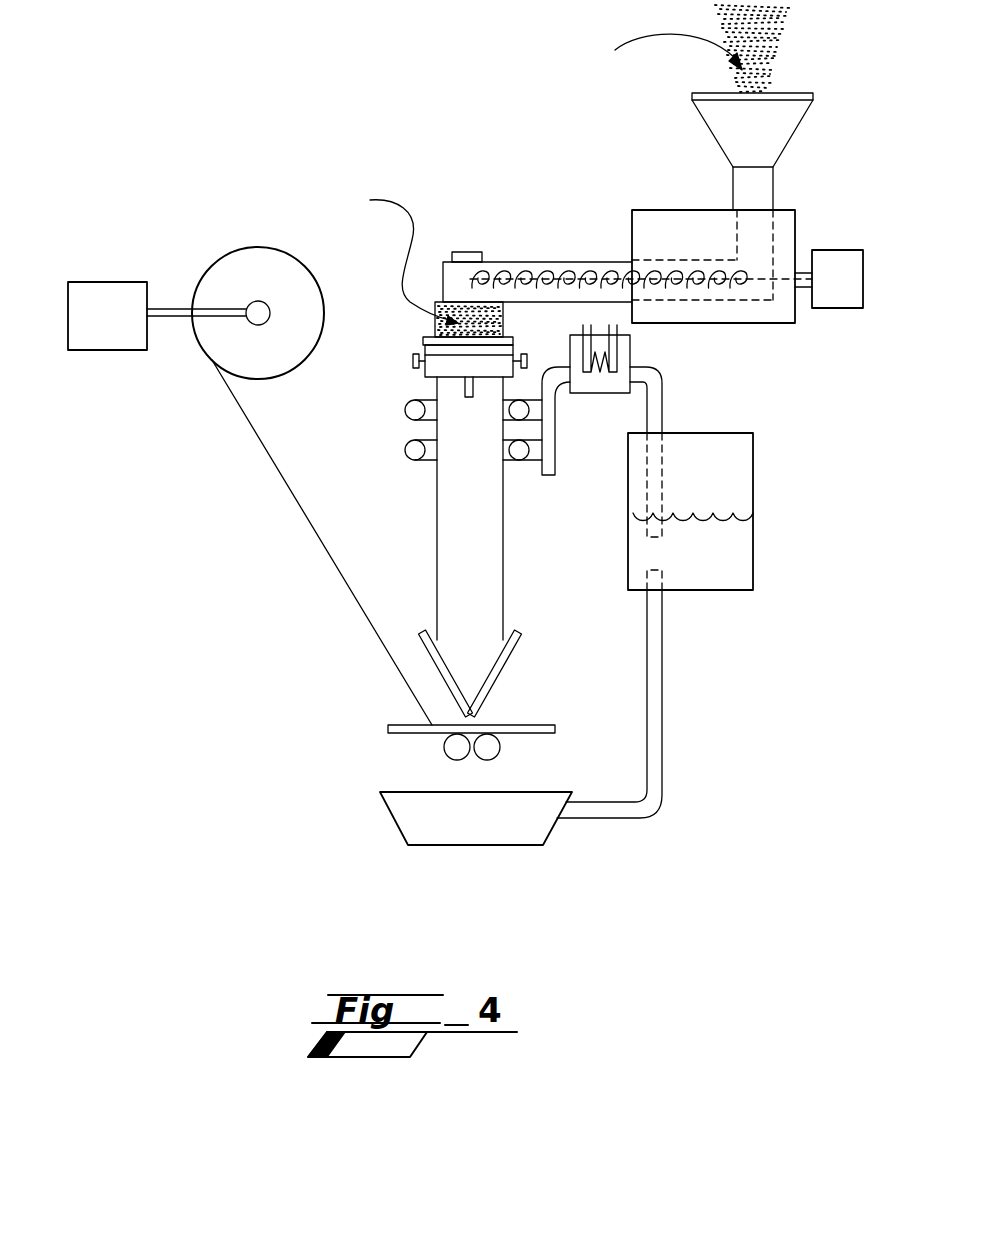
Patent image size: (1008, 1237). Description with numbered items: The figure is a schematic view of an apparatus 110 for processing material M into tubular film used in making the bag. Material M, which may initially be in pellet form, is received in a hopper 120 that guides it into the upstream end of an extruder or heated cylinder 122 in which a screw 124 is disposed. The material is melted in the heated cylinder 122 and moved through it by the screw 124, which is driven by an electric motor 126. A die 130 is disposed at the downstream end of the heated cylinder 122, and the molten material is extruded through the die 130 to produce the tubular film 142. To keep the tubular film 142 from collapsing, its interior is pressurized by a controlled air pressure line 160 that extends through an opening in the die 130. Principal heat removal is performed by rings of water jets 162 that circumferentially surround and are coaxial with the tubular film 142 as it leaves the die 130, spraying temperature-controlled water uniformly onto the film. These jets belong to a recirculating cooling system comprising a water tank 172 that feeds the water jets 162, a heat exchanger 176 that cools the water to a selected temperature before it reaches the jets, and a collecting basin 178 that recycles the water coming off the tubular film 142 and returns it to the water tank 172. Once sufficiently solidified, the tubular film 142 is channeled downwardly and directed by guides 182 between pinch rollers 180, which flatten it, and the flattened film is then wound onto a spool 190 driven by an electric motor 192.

The apparatus 110 is at (327, 58).
The hopper 120 is at (776, 137).
The heated cylinder 122 is at (552, 243).
The screw 124 is at (503, 264).
The electric motor 126 is at (857, 300).
The die 130 is at (395, 342).
The tubular film 142 is at (490, 553).
The controlled air pressure line 160 is at (463, 397).
The water jets 162 is at (425, 399).
The water tank 172 is at (727, 492).
The heat exchanger 176 is at (648, 347).
The collecting basin 178 is at (490, 832).
The pinch rollers 180 is at (443, 749).
The guides 182 is at (427, 661).
The spool 190 is at (265, 270).
The electric motor 192 is at (122, 328).